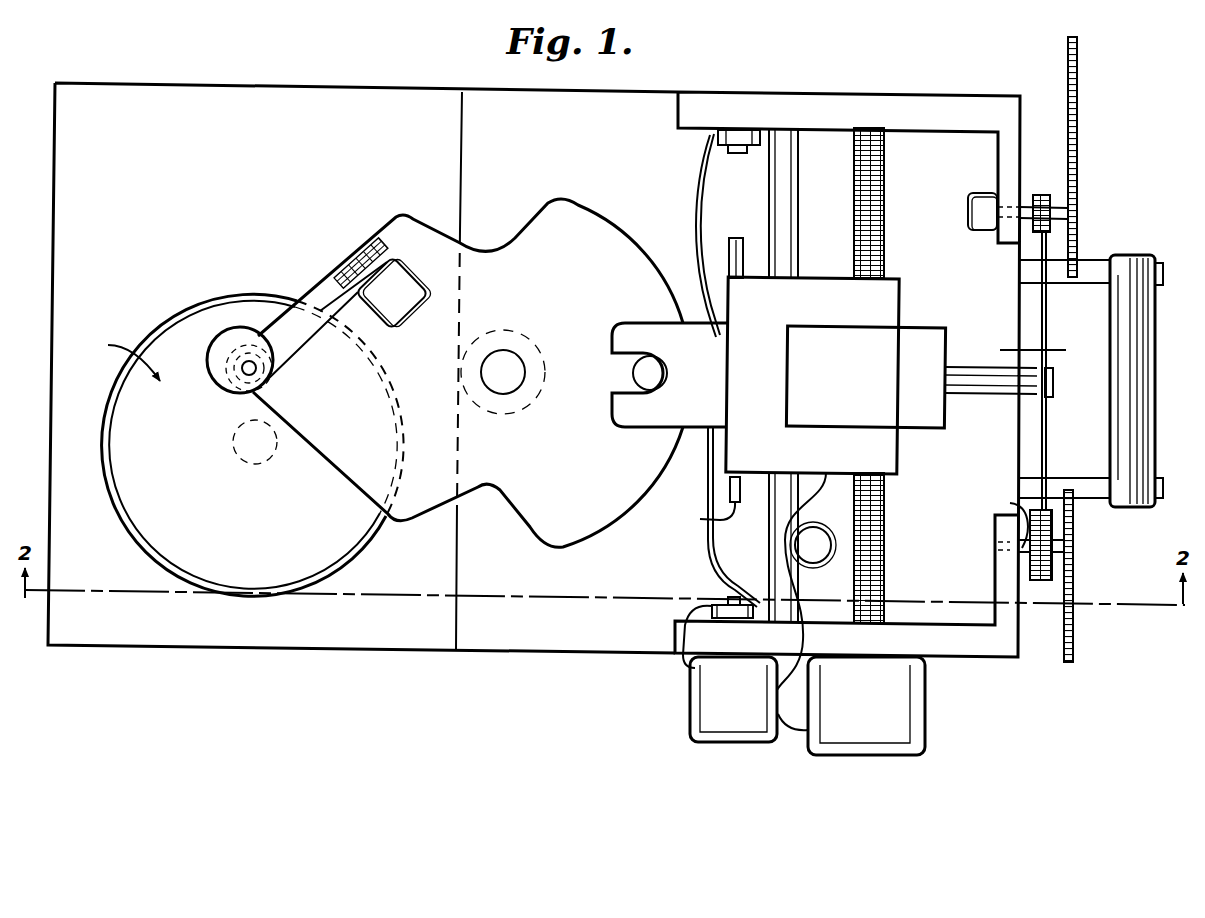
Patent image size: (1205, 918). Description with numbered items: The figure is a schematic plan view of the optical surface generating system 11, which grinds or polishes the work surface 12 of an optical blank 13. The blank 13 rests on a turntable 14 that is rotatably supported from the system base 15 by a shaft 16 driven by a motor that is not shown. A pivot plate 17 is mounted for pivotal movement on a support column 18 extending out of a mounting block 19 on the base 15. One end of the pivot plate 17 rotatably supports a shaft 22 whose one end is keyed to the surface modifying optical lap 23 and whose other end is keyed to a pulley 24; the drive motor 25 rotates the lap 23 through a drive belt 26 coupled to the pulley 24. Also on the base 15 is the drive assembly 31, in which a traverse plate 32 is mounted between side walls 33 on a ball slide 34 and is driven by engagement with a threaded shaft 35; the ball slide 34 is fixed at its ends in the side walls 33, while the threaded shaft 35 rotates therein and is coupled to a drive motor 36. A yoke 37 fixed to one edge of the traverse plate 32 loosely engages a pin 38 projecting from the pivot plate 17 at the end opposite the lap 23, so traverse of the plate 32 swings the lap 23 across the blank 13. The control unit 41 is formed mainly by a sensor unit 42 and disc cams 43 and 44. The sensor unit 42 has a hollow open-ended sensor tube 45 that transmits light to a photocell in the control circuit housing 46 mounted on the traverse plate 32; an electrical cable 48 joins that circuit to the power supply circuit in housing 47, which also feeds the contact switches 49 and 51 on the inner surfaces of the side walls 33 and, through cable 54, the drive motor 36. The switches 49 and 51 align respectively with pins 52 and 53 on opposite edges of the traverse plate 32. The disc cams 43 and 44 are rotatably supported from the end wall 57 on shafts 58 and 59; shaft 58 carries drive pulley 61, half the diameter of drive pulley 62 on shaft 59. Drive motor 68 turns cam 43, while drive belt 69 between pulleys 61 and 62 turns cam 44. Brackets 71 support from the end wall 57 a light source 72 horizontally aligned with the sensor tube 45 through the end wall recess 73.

The optical surface generating system 11 is at (626, 657).
The work surface 12 is at (168, 343).
The optical blank 13 is at (116, 354).
The turntable 14 is at (110, 403).
The system base 15 is at (291, 640).
The shaft 16 is at (246, 459).
The pivot plate 17 is at (523, 258).
The support column 18 is at (516, 358).
The mounting block 19 is at (538, 397).
The shaft 22 is at (247, 371).
The surface modifying optical lap 23 is at (235, 330).
The pulley 24 is at (262, 383).
The drive motor 25 is at (403, 280).
The drive belt 26 is at (293, 312).
The drive assembly 31 is at (716, 438).
The traverse plate 32 is at (738, 293).
The side walls 33 is at (837, 103).
The ball slide 34 is at (788, 213).
The threaded shaft 35 is at (887, 185).
The drive motor 36 is at (913, 711).
The yoke 37 is at (652, 413).
The pin 38 is at (636, 373).
The control unit 41 is at (1090, 257).
The sensor unit 42 is at (936, 325).
The disc cam 43 is at (1073, 93).
The disc cam 44 is at (1070, 633).
The sensor tube 45 is at (992, 398).
The control circuit housing 46 is at (795, 379).
The housing 47 is at (713, 712).
The electrical cable 48 is at (830, 464).
The contact switch 49 is at (733, 616).
The contact switch 51 is at (735, 131).
The pin 52 is at (733, 517).
The pin 53 is at (733, 240).
The electrical cable 54 is at (787, 733).
The end wall 57 is at (1013, 167).
The shaft 58 is at (1022, 244).
The shaft 59 is at (1010, 504).
The drive pulley 61 is at (1050, 197).
The drive pulley 62 is at (1057, 531).
The drive motor 68 is at (979, 203).
The drive belt 69 is at (1046, 439).
The brackets 71 is at (1097, 283).
The light source 72 is at (1138, 383).
The end wall recess 73 is at (1047, 352).